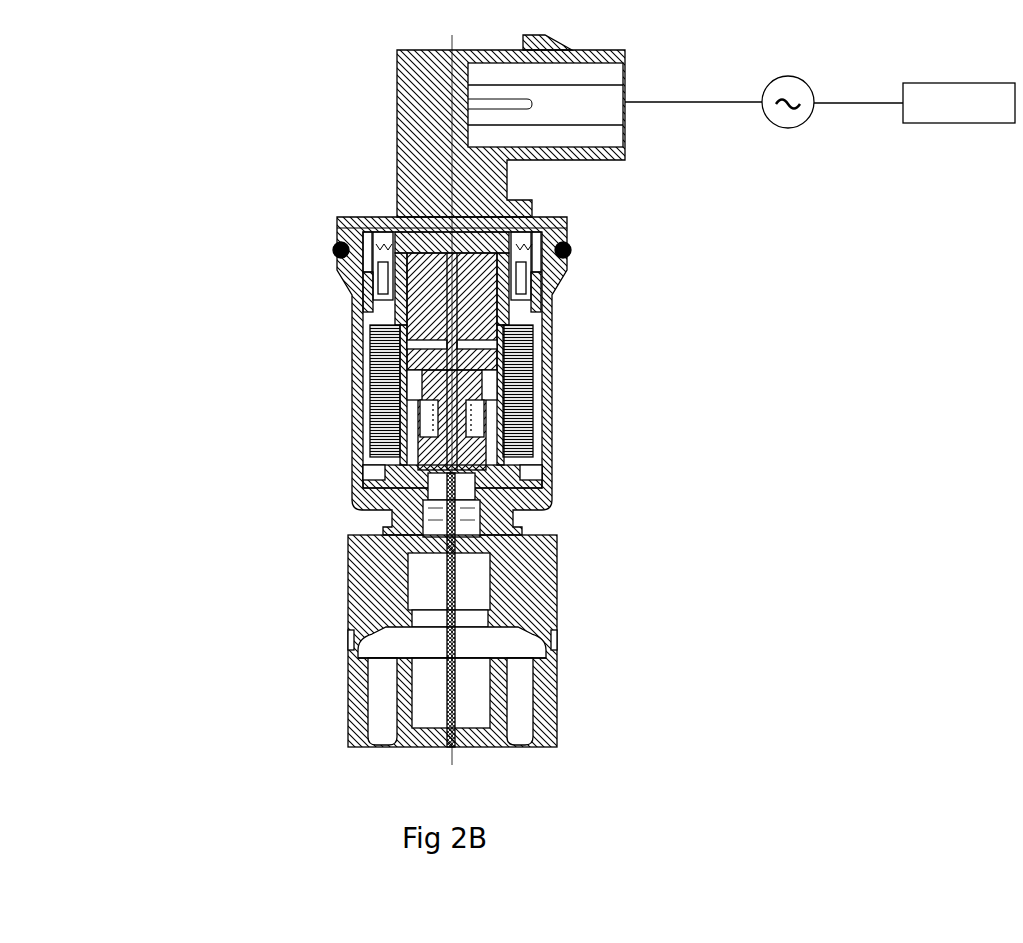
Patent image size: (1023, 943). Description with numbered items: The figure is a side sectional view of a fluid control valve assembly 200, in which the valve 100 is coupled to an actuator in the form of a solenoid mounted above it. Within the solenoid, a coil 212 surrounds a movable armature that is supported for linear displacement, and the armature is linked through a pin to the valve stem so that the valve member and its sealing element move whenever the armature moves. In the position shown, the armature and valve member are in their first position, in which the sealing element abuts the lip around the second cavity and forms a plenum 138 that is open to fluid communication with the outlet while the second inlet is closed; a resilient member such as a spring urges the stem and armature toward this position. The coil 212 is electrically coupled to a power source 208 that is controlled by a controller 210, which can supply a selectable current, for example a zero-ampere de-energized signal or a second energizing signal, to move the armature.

The fluid control valve assembly 200 is at (273, 285).
The coil 212 is at (537, 383).
The valve 100 is at (595, 617).
The plenum 138 is at (433, 655).
The power source 208 is at (786, 128).
The controller 210 is at (948, 123).